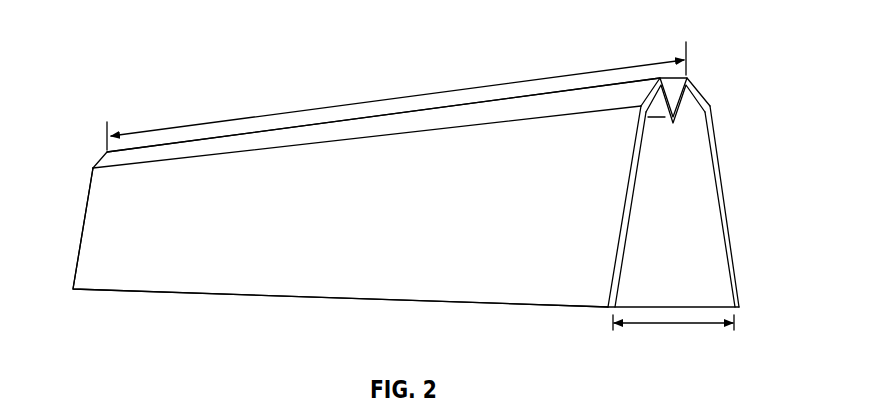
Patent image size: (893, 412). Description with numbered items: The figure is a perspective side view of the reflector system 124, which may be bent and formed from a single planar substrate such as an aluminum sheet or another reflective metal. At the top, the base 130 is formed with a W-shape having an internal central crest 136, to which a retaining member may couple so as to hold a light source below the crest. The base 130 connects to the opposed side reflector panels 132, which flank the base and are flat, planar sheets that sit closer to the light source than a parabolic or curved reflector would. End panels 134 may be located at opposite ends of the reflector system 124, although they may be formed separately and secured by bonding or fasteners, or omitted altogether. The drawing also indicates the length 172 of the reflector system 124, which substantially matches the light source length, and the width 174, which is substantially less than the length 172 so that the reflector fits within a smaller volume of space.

The reflector system 124 is at (152, 73).
The base 130 is at (578, 95).
The side reflector panels 132 is at (285, 268).
The end panels 134 is at (693, 293).
The central crest 136 is at (686, 108).
The length 172 is at (432, 92).
The width 174 is at (690, 325).